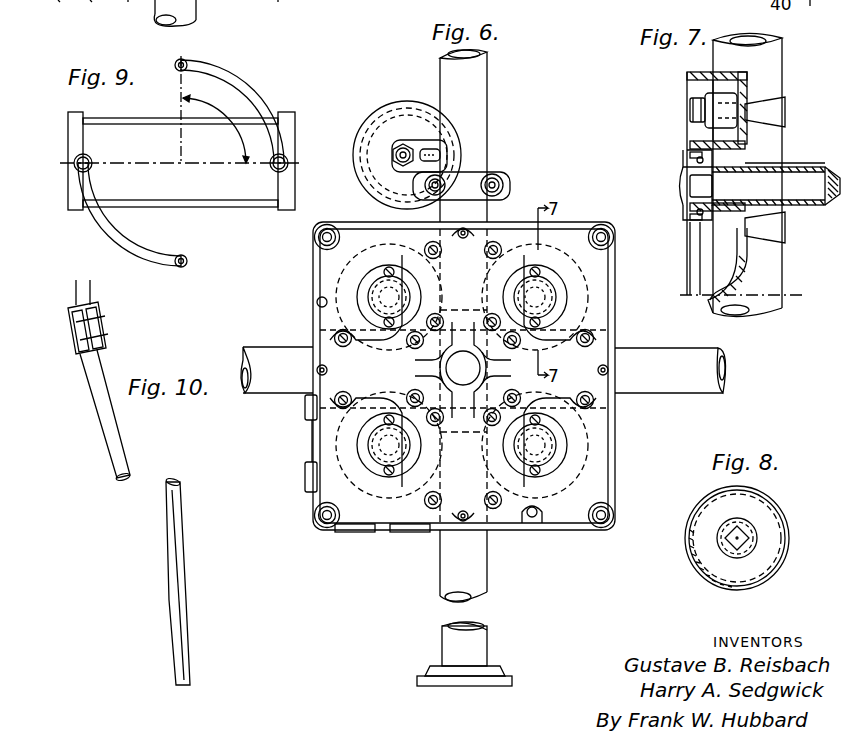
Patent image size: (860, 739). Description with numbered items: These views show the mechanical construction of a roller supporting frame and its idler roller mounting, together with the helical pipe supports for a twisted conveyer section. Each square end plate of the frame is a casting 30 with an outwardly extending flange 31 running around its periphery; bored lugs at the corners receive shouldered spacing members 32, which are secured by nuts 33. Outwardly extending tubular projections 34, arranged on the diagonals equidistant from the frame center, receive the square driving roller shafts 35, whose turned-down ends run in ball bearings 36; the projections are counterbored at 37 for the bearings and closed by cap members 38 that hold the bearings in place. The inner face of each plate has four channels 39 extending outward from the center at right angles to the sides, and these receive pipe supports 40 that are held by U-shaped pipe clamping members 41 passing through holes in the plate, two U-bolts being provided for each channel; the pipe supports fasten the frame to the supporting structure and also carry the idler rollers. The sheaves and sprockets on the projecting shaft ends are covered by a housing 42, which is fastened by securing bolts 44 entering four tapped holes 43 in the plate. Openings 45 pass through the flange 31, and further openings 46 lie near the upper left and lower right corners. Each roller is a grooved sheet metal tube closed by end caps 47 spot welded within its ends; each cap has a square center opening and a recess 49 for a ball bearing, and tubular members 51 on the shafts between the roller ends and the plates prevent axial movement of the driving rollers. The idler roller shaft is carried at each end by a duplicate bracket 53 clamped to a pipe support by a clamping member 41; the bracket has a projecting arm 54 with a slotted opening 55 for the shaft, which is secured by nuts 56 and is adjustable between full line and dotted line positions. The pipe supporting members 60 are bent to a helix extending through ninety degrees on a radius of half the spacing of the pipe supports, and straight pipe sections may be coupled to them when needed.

In FIG. 6, the casting 30 is at (606, 450).
In FIG. 7, the casting 30 is at (748, 88).
In FIG. 6, the flange 31 is at (610, 300).
In FIG. 7, the flange 31 is at (692, 76).
In FIG. 6, the spacing members 32 is at (334, 214).
In FIG. 9, the spacing members 32 is at (277, 2).
In FIG. 6, the nuts 33 is at (322, 528).
In FIG. 9, the nuts 33 is at (137, 8).
In FIG. 6, the tubular projections 34 is at (552, 284).
In FIG. 7, the tubular projections 34 is at (730, 150).
In FIG. 7, the shafts 35 is at (826, 174).
In FIG. 7, the ball bearings 36 is at (690, 166).
In FIG. 7, the counterbore 37 is at (690, 210).
In FIG. 7, the cap members 38 is at (686, 188).
In FIG. 6, the channels 39 is at (500, 250).
In FIG. 6, the pipe supports 40 is at (476, 104).
In FIG. 7, the pipe supports 40 is at (773, 270).
In FIG. 9, the pipe supports 40 is at (197, 8).
In FIG. 7, the U-shaped pipe clamping members 41 is at (778, 106).
In FIG. 9, the housing 42 is at (90, 2).
In FIG. 6, the tapped holes 43 is at (470, 230).
In FIG. 9, the securing bolts 44 is at (56, 2).
In FIG. 6, the openings 45 is at (316, 416).
In FIG. 6, the openings 46 is at (318, 302).
In FIG. 8, the end caps 47 is at (768, 516).
In FIG. 8, the recess 49 is at (760, 538).
In FIG. 7, the tubular members 51 is at (785, 167).
In FIG. 6, the brackets 53 is at (474, 180).
In FIG. 6, the projecting arm 54 is at (392, 156).
In FIG. 6, the slotted opening 55 is at (430, 148).
In FIG. 6, the nuts 56 is at (402, 143).
In FIG. 9, the pipe supporting members 60 is at (258, 98).
In FIG. 10, the pipe supporting members 60 is at (168, 490).